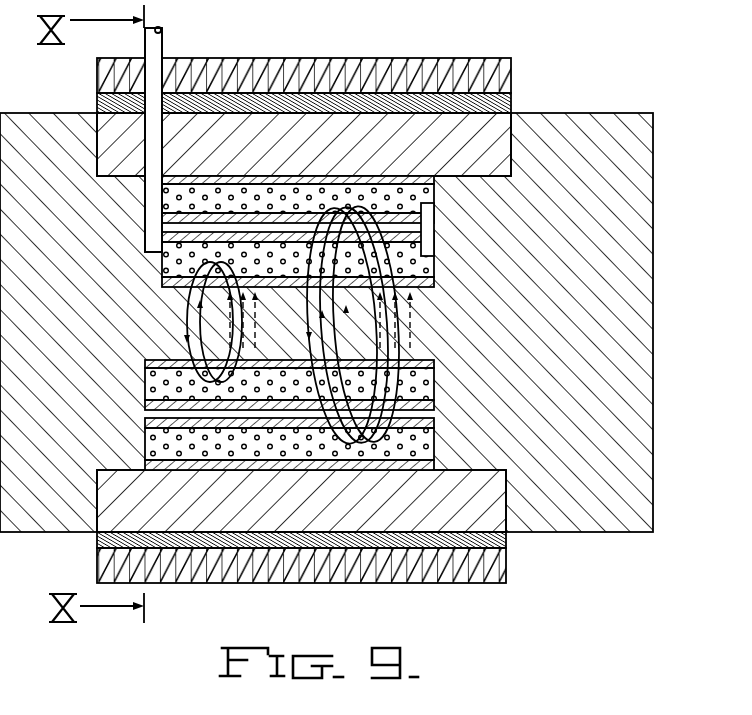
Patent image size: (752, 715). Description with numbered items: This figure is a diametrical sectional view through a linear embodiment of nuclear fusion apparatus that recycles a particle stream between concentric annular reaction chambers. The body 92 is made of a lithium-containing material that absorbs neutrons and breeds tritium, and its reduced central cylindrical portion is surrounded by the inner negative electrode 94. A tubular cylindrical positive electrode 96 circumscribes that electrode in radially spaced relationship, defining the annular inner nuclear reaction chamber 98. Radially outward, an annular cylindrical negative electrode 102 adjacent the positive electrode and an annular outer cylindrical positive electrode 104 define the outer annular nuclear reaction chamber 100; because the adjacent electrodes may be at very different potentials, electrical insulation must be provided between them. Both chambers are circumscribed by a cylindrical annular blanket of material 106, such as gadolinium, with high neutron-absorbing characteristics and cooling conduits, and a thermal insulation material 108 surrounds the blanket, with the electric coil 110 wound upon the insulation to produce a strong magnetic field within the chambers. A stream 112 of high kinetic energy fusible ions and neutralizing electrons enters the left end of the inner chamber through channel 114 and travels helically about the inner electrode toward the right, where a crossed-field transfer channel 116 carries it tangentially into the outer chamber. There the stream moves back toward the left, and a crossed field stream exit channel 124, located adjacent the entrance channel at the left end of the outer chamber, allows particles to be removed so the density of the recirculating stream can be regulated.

The body 92 is at (658, 278).
The inner negative electrode 94 is at (418, 360).
The cylindrical positive electrode 96 is at (434, 266).
The inner nuclear reaction chamber 98 is at (434, 388).
The outer annular nuclear reaction chamber 100 is at (427, 190).
The annular cylindrical negative electrode 102 is at (434, 430).
The annular outer cylindrical positive electrode 104 is at (434, 455).
The blanket of material 106 is at (397, 143).
The thermal insulation material 108 is at (506, 540).
The electric coil 110 is at (140, 567).
The stream 112 is at (192, 306).
The channel 114 is at (164, 46).
The transfer channel 116 is at (426, 232).
The crossed field stream exit channel 124 is at (223, 135).